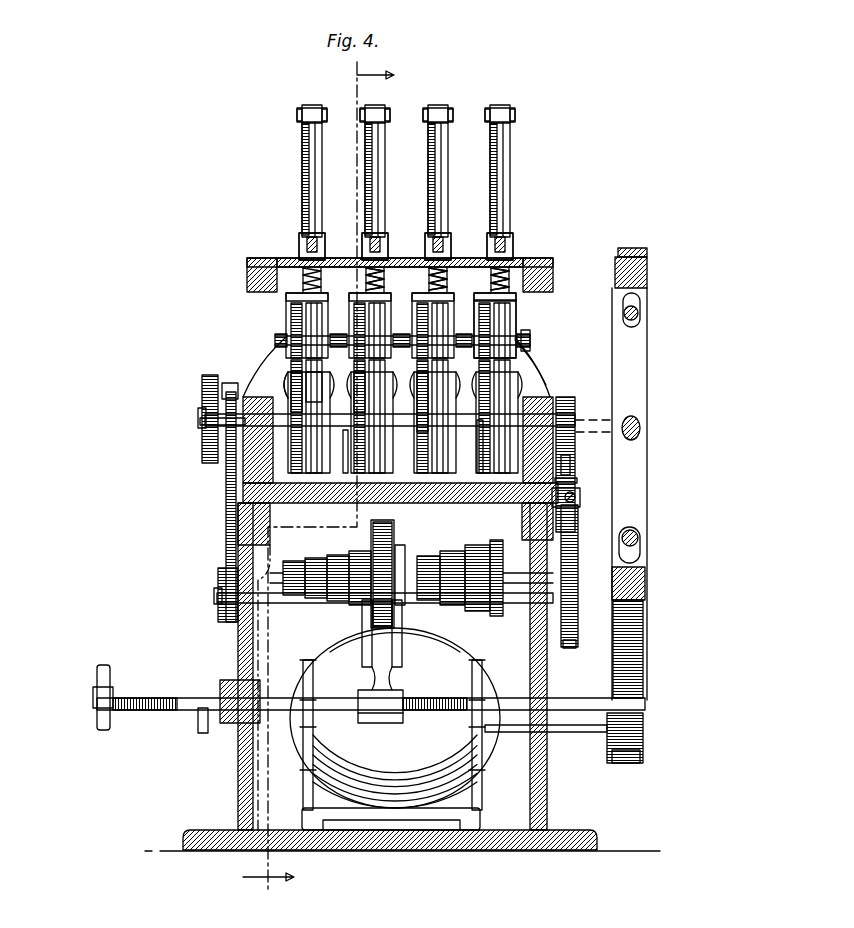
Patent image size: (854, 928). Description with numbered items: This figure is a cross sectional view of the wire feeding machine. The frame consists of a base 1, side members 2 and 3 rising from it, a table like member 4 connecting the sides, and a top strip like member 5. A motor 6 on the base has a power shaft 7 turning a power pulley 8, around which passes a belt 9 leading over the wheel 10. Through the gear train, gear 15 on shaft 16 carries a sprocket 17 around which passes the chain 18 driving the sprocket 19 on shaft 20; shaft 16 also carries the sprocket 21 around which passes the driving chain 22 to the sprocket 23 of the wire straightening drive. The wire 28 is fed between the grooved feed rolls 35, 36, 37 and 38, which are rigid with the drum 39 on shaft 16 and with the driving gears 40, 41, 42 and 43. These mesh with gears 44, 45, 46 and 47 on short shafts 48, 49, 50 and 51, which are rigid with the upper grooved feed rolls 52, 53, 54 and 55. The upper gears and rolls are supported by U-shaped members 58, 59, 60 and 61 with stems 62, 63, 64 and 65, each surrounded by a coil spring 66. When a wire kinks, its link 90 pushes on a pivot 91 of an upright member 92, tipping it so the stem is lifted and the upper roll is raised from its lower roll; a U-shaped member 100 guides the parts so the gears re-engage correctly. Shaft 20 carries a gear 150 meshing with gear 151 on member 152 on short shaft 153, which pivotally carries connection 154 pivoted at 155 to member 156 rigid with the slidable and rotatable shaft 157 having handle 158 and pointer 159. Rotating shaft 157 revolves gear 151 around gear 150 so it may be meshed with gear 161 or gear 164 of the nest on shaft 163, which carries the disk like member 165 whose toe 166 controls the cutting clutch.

The base 1 is at (203, 830).
The side member 2 is at (541, 772).
The side member 3 is at (237, 767).
The table like member 4 is at (414, 492).
The top strip like member 5 is at (580, 212).
The motor 6 is at (465, 782).
The power shaft 7 is at (645, 727).
The power pulley 8 is at (644, 750).
The belt 9 is at (642, 249).
The wheel 10 is at (650, 270).
The gear 15 is at (204, 377).
The shaft 16 is at (199, 416).
The sprocket 17 is at (241, 390).
The chain 18 is at (226, 510).
The sprocket 19 is at (217, 578).
The shaft 20 is at (214, 597).
The sprocket 21 is at (577, 412).
The driving chain 22 is at (568, 465).
The sprocket 23 is at (577, 480).
The wire 28 is at (528, 385).
The grooved feed roll 35 is at (312, 402).
The grooved feed roll 36 is at (374, 418).
The grooved feed roll 37 is at (424, 420).
The grooved feed roll 38 is at (482, 447).
The drum 39 is at (343, 440).
The driving gear 40 is at (292, 400).
The driving gear 41 is at (356, 404).
The driving gear 42 is at (444, 422).
The driving gear 43 is at (524, 397).
The gear 44 is at (296, 320).
The gear 45 is at (400, 250).
The gear 46 is at (471, 302).
The gear 47 is at (512, 318).
The short shaft 48 is at (275, 342).
The short shaft 49 is at (342, 350).
The short shaft 50 is at (401, 350).
The short shaft 51 is at (464, 350).
The grooved feed roll 52 is at (300, 374).
The grooved feed roll 53 is at (378, 293).
The grooved feed roll 54 is at (441, 293).
The grooved feed roll 55 is at (527, 308).
The U-shaped member 58 is at (285, 297).
The U-shaped member 59 is at (352, 306).
The U-shaped member 60 is at (413, 307).
The U-shaped member 61 is at (520, 294).
The stem 62 is at (301, 252).
The stem 63 is at (388, 245).
The stem 64 is at (445, 247).
The stem 65 is at (500, 258).
The coil spring 66 is at (525, 290).
The connecting member or link 90 is at (318, 158).
The pivot 91 is at (323, 113).
The upright member 92 is at (370, 160).
The U-shaped member 100 is at (531, 335).
The gear 150 is at (374, 617).
The gear 151 is at (392, 525).
The member 152 is at (371, 545).
The short shaft 153 is at (442, 552).
The connection 154 is at (420, 628).
The pivot 155 is at (364, 657).
The member 156 is at (370, 685).
The slidable and rotatable shaft 157 is at (150, 698).
The handle 158 is at (103, 667).
The pointer 159 is at (222, 727).
The gear 161 is at (398, 545).
The shaft 163 is at (578, 585).
The gear 164 is at (297, 557).
The disk like member 165 is at (570, 649).
The toe 166 is at (578, 512).